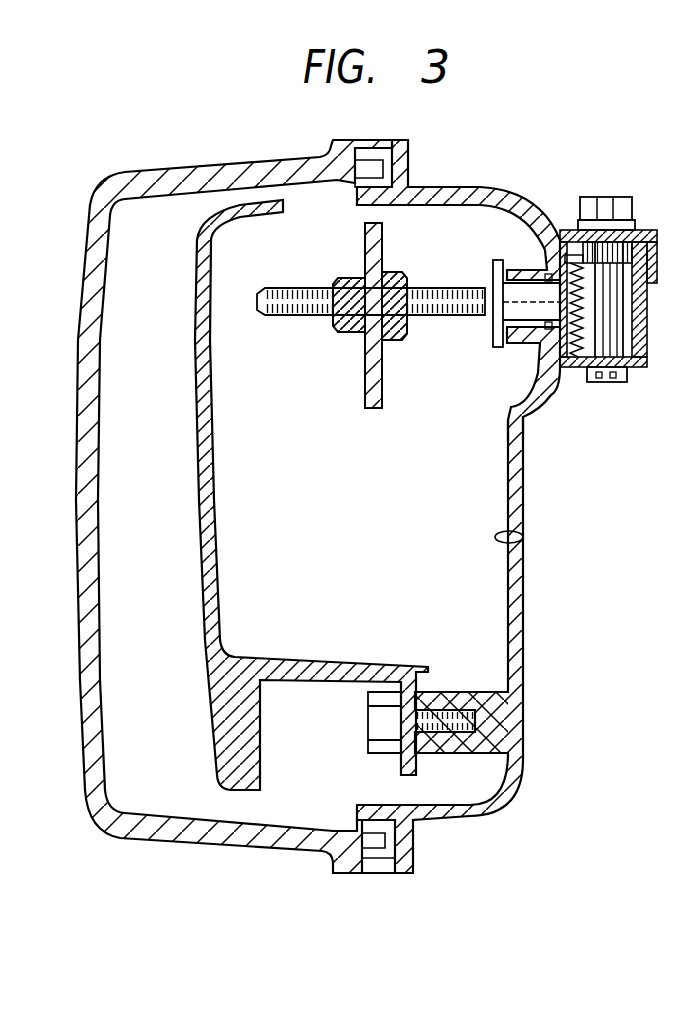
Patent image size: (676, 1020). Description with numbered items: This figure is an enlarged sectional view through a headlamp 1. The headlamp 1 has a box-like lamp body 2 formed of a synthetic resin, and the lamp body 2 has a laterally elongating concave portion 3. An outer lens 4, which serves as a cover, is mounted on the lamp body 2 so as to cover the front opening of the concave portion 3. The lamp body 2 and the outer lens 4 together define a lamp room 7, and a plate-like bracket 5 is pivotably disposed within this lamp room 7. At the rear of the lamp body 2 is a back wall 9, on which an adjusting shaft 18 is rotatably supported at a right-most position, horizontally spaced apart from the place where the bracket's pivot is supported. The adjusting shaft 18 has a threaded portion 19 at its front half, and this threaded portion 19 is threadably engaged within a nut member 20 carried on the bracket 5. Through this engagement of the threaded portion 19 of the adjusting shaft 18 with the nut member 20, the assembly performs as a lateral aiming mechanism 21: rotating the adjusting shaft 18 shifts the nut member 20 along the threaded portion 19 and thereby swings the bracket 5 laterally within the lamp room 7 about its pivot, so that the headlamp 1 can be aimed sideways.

The headlamp 1 is at (72, 156).
The lamp body 2 is at (518, 507).
The concave portion 3 is at (523, 537).
The outer lens 4 is at (80, 384).
The bracket 5 is at (370, 373).
The lamp room 7 is at (357, 508).
The back wall 9 is at (505, 452).
The adjusting shaft 18 is at (485, 288).
The threaded portion 19 is at (293, 287).
The nut member 20 is at (393, 271).
The lateral aiming mechanism 21 is at (423, 358).